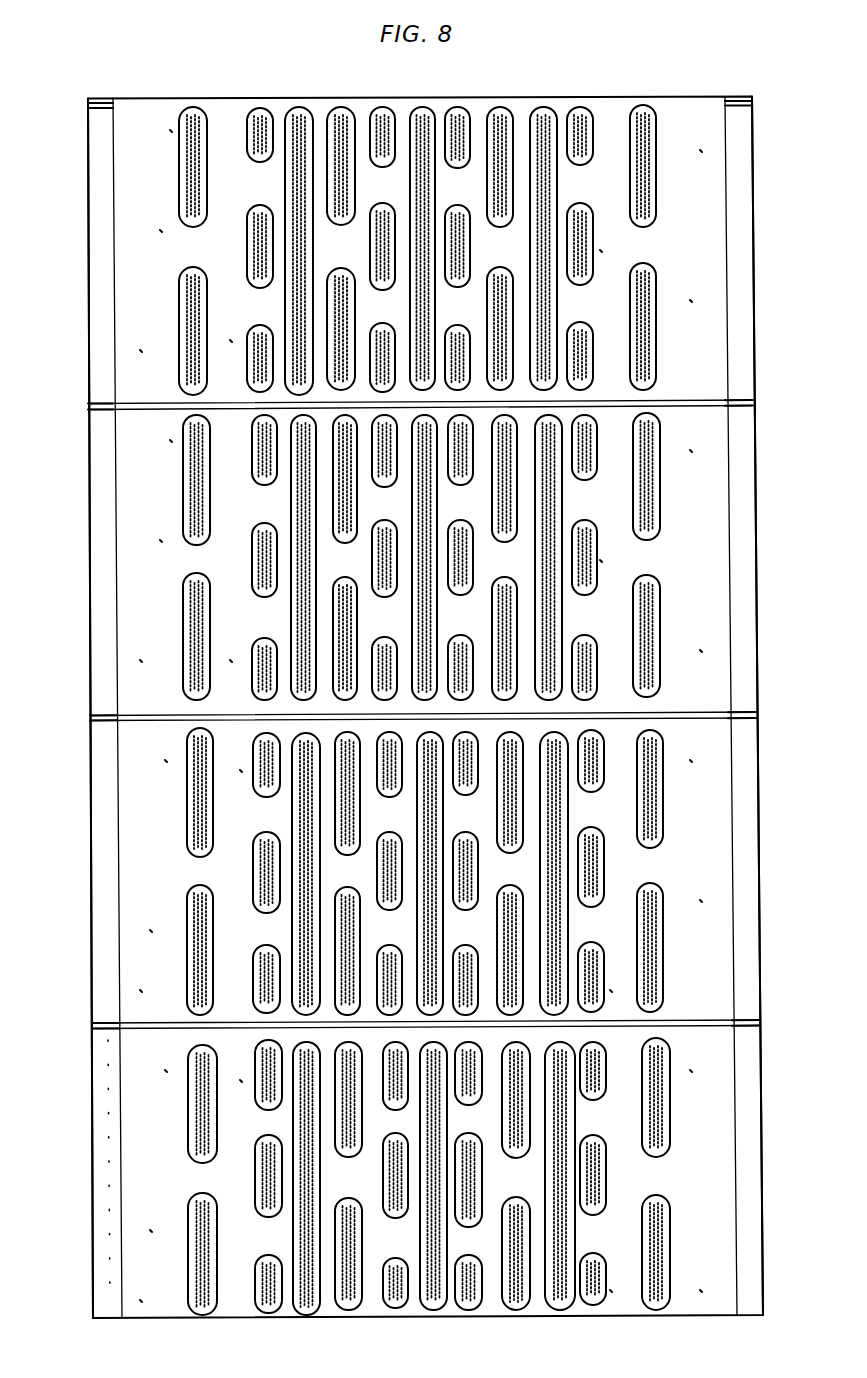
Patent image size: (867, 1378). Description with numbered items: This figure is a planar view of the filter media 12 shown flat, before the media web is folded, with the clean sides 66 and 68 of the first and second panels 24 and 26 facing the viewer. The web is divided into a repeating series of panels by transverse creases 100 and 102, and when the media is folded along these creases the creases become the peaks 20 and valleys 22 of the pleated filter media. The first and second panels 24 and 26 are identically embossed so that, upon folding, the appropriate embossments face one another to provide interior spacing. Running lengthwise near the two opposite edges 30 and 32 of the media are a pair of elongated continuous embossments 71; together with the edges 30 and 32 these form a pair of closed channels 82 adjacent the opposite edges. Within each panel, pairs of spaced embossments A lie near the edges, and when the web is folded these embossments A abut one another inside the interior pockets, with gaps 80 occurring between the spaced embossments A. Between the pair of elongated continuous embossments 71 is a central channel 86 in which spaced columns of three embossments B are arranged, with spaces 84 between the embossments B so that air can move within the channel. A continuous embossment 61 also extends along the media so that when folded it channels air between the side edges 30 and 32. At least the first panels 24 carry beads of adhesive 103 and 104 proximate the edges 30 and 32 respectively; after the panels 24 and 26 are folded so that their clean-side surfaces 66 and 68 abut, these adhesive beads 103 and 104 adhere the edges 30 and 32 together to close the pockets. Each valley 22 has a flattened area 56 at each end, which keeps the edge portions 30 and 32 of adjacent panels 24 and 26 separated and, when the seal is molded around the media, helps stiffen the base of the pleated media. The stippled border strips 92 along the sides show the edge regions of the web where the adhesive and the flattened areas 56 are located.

The filter media 12 is at (694, 163).
The peaks 20 is at (140, 403).
The valleys 22 is at (690, 714).
The first panels 24 is at (171, 585).
The second panels 26 is at (166, 327).
The edge 30 is at (88, 600).
The edge 32 is at (757, 605).
The flattened area 56 is at (88, 102).
The continuous embossment 61 is at (425, 115).
The clean side 66 is at (710, 462).
The clean side 68 is at (710, 258).
The elongated continuous embossments 71 is at (300, 115).
The gaps 80 is at (185, 243).
The closed channels 82 is at (150, 128).
The spaces 84 is at (402, 197).
The central channel 86 is at (515, 114).
The side strip 92 is at (105, 1118).
The crease 100 is at (238, 405).
The crease 102 is at (150, 715).
The bead of adhesive 103 is at (105, 190).
The bead of adhesive 104 is at (728, 190).
The spaced embossments A is at (190, 170).
The embossments B is at (387, 115).